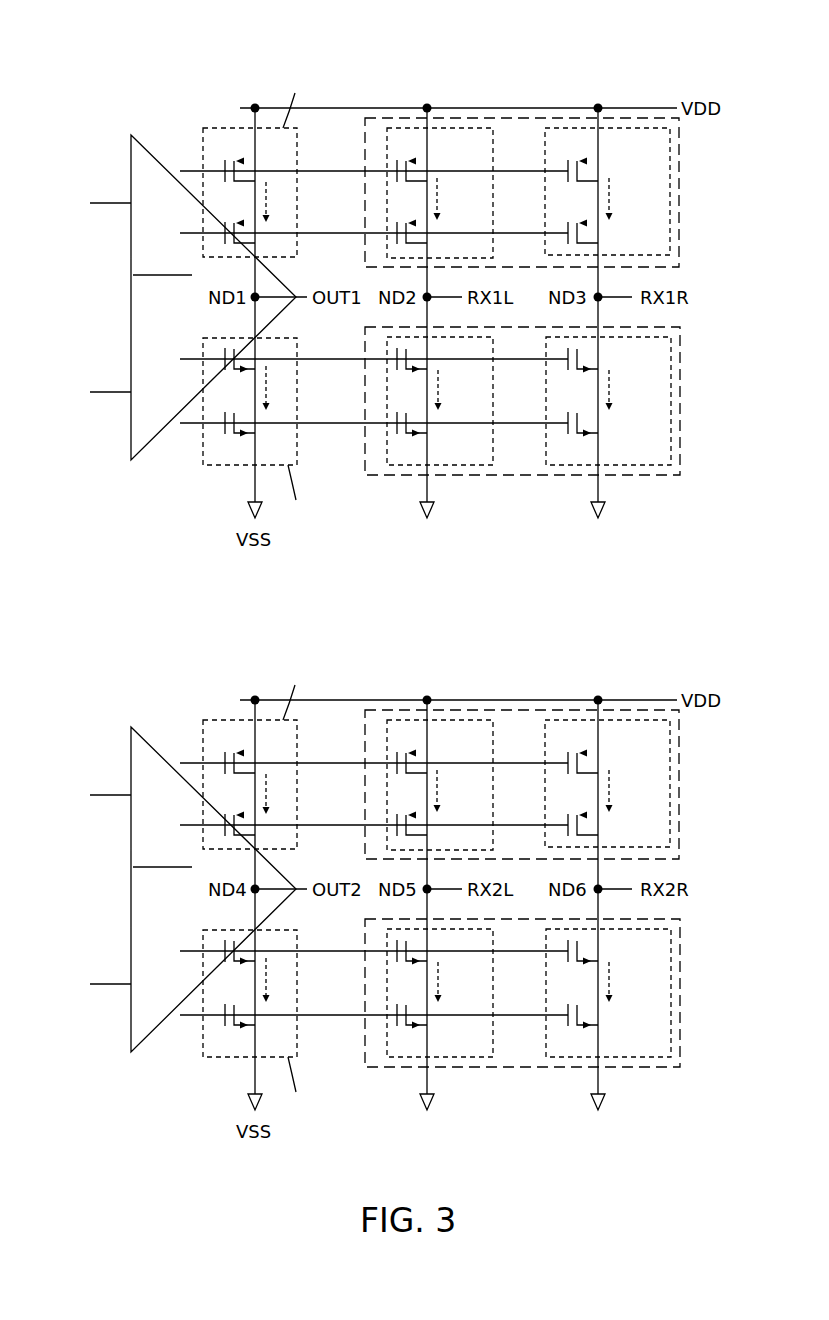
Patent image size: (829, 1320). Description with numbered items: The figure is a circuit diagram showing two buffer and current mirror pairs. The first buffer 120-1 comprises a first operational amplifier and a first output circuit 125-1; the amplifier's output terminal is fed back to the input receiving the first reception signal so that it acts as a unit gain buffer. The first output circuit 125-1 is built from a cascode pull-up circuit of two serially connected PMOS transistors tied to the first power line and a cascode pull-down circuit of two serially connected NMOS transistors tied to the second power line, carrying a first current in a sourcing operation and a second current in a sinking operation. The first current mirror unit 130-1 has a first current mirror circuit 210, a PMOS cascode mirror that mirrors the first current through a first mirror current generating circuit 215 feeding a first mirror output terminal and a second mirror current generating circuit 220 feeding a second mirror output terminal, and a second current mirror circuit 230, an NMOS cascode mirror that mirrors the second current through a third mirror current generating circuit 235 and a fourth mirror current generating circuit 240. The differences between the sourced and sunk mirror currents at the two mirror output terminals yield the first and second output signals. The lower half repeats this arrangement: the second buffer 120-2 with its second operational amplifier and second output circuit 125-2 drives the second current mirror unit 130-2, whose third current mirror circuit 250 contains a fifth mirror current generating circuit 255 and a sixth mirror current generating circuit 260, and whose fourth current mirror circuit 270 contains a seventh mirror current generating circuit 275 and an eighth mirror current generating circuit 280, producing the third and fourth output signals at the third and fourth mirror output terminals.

The first buffer 120-1 is at (353, 50).
The first output circuit 125-1 is at (224, 108).
The first current mirror unit 130-1 is at (595, 48).
The first current mirror circuit 210 is at (679, 143).
The first mirror current generating circuit 215 is at (455, 128).
The second mirror current generating circuit 220 is at (627, 128).
The second current mirror circuit 230 is at (680, 455).
The third mirror current generating circuit 235 is at (455, 465).
The fourth mirror current generating circuit 240 is at (628, 465).
The second buffer 120-2 is at (198, 856).
The second output circuit 125-2 is at (233, 881).
The second current mirror unit 130-2 is at (557, 859).
The third current mirror circuit 250 is at (557, 762).
The fifth mirror current generating circuit 255 is at (440, 757).
The sixth mirror current generating circuit 260 is at (607, 756).
The fourth current mirror circuit 270 is at (557, 1020).
The seventh mirror current generating circuit 275 is at (440, 1023).
The eighth mirror current generating circuit 280 is at (615, 1025).